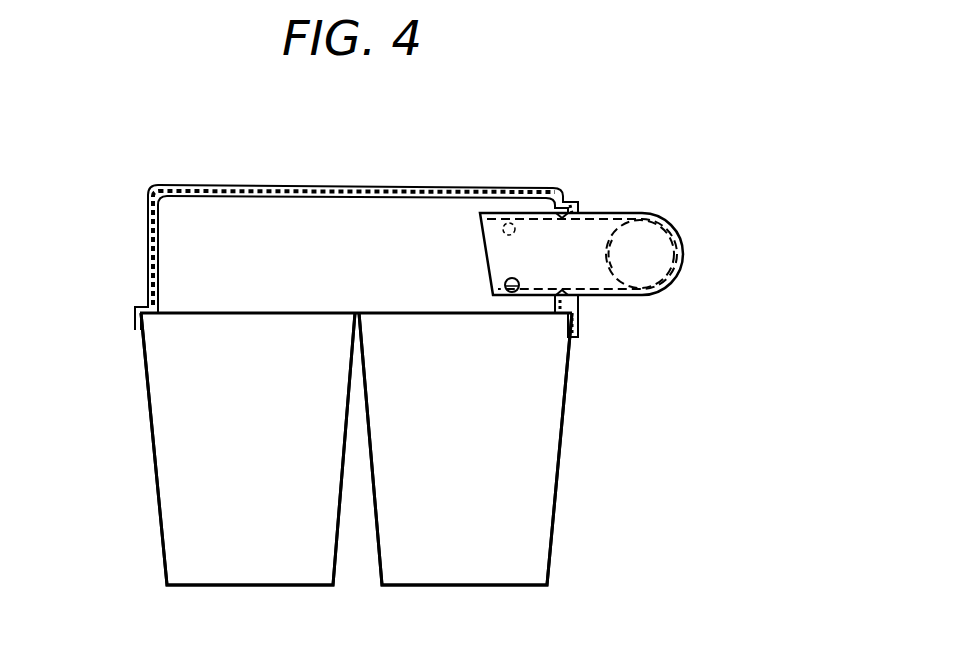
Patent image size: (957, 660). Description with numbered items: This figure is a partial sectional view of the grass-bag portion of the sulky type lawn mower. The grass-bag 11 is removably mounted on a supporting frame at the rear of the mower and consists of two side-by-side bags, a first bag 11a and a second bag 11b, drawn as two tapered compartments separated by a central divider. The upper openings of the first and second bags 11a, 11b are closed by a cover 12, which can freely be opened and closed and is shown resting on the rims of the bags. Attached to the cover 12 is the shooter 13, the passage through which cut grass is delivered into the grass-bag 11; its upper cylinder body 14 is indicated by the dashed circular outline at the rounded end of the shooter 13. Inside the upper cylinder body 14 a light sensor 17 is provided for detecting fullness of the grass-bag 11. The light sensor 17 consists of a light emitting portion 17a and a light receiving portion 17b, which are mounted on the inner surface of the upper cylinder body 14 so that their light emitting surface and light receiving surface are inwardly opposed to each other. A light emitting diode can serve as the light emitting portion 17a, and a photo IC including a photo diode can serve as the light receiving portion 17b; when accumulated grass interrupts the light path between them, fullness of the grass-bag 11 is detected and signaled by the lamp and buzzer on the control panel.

The grass-bag 11 is at (140, 352).
The first bag 11a is at (541, 461).
The second bag 11b is at (163, 456).
The cover 12 is at (148, 222).
The shooter 13 is at (679, 228).
The upper cylinder body 14 is at (618, 213).
The light sensor 17 is at (482, 185).
The light emitting portion 17a is at (502, 229).
The light receiving portion 17b is at (515, 278).